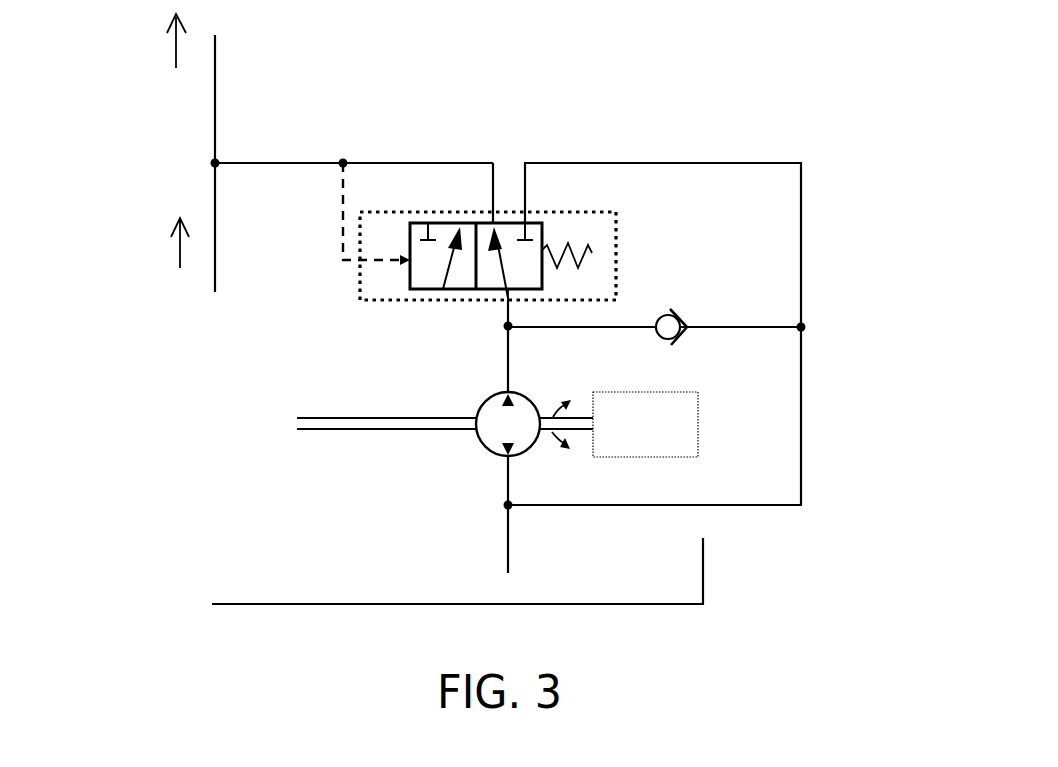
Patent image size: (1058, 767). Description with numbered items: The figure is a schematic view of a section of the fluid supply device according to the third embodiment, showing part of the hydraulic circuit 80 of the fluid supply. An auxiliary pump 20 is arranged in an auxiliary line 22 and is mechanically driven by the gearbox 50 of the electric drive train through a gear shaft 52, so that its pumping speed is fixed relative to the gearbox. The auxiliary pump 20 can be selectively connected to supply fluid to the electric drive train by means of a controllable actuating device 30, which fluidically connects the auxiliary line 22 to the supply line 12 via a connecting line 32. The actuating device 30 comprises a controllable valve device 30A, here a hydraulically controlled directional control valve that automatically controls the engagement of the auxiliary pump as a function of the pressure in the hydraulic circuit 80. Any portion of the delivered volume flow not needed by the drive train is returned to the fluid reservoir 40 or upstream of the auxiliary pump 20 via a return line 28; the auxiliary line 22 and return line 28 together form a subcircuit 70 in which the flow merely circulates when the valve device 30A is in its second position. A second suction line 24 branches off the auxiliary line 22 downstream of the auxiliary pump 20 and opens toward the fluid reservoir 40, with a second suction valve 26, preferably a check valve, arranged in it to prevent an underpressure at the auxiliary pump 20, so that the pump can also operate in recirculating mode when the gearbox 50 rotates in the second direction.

The supply line 12 is at (215, 270).
The auxiliary pump 20 is at (502, 412).
The auxiliary line 22 is at (502, 353).
The second suction line 24 is at (737, 328).
The second suction valve 26 is at (670, 310).
The return line 28 is at (693, 163).
The controllable actuating device 30 is at (473, 271).
The controllable valve device 30A is at (410, 270).
The connecting line 32 is at (375, 163).
The fluid reservoir 40 is at (705, 573).
The gearbox 50 is at (700, 422).
The gear shaft 52 is at (350, 423).
The subcircuit 70 is at (567, 286).
The hydraulic circuit 80 is at (128, 169).